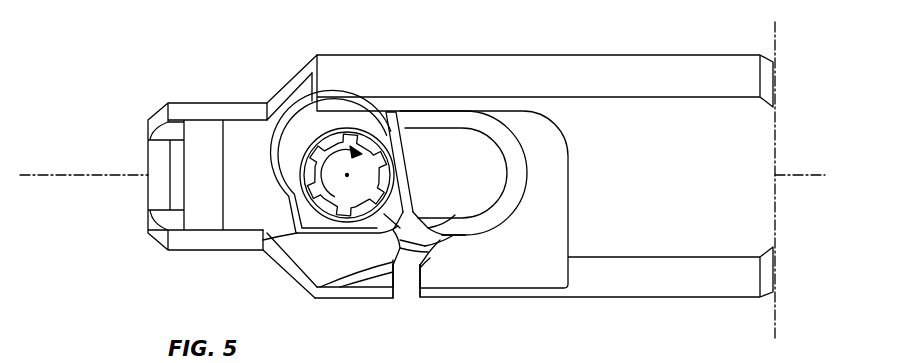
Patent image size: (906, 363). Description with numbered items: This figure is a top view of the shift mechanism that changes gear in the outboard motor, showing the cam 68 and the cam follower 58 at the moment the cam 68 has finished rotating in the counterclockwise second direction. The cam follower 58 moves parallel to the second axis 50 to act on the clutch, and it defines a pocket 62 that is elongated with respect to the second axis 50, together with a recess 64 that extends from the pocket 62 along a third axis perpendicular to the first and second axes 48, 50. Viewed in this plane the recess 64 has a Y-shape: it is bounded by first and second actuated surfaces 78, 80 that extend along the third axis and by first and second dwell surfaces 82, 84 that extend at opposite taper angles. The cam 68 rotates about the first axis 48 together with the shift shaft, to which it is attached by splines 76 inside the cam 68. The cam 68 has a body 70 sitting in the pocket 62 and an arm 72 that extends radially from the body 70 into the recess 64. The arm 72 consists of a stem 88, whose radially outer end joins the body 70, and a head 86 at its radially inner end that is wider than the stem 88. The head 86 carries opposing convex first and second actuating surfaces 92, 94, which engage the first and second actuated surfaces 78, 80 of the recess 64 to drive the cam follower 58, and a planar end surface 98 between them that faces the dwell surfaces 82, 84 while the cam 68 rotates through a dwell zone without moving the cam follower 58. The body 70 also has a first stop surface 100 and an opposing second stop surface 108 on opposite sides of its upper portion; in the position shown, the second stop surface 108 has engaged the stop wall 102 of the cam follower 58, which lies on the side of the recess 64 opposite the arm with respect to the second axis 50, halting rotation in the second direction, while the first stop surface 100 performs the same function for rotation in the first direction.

The first axis 48 is at (399, 118).
The second axis 50 is at (44, 170).
The cam follower 58 is at (773, 52).
The pocket 62 is at (504, 139).
The recess 64 is at (414, 305).
The cam 68 is at (287, 152).
The body 70 is at (297, 196).
The arm 72 is at (414, 218).
The splines 76 is at (330, 143).
The first actuated surface 78 is at (397, 268).
The second actuated surface 80 is at (423, 277).
The first dwell surface 82 is at (405, 248).
The second dwell surface 84 is at (440, 247).
The head 86 is at (445, 235).
The stem 88 is at (403, 268).
The first actuating surface 92 is at (399, 286).
The second actuating surface 94 is at (425, 240).
The planar end surface 98 is at (435, 252).
The first stop surface 100 is at (273, 237).
The stop wall 102 is at (453, 111).
The second stop surface 108 is at (388, 114).